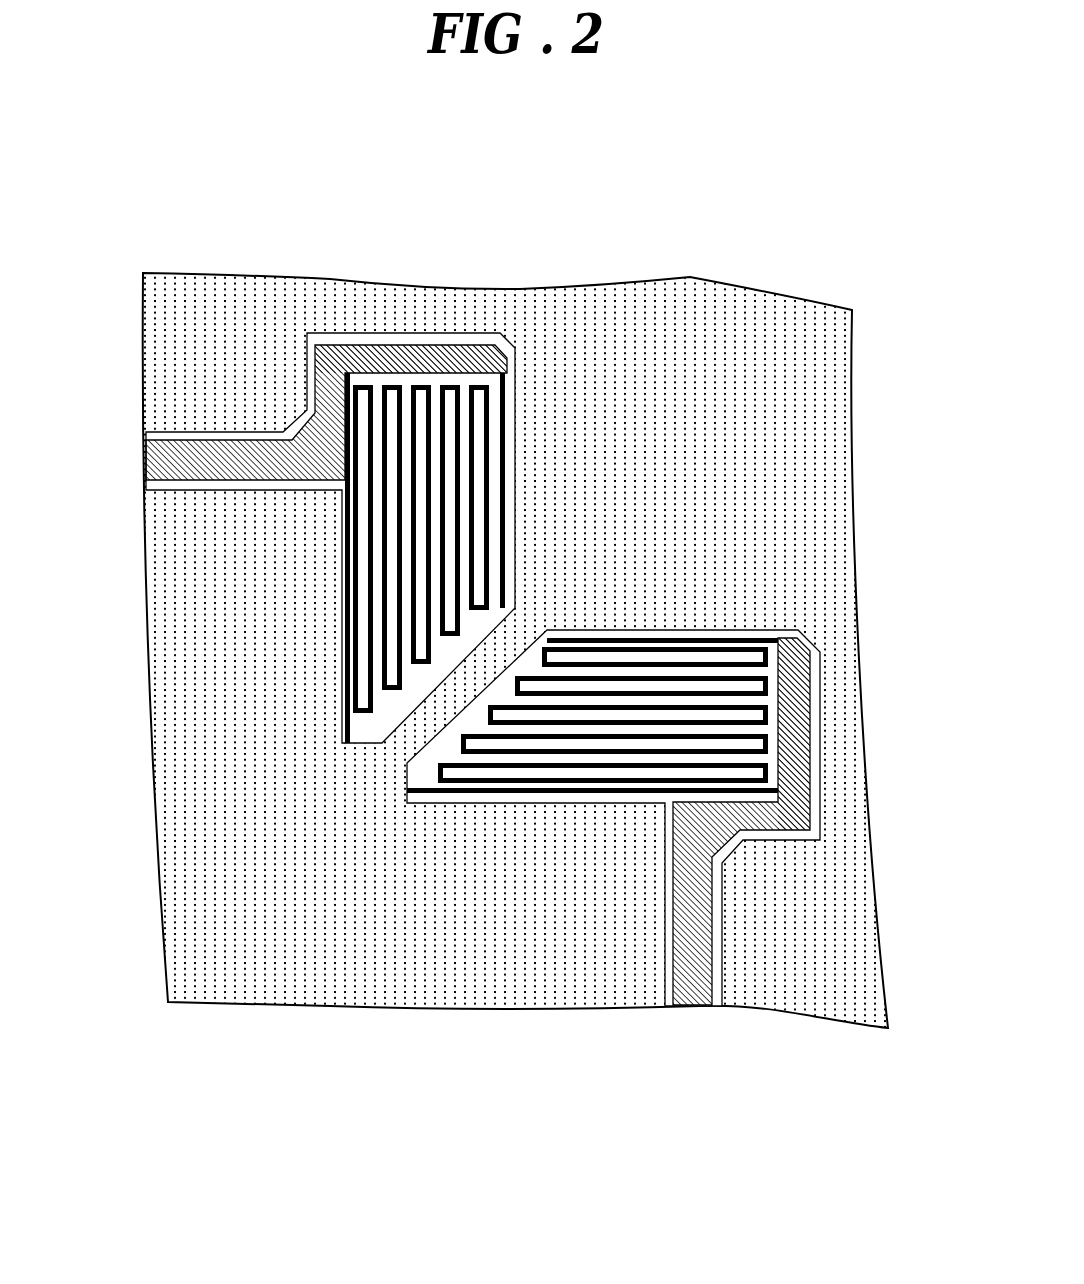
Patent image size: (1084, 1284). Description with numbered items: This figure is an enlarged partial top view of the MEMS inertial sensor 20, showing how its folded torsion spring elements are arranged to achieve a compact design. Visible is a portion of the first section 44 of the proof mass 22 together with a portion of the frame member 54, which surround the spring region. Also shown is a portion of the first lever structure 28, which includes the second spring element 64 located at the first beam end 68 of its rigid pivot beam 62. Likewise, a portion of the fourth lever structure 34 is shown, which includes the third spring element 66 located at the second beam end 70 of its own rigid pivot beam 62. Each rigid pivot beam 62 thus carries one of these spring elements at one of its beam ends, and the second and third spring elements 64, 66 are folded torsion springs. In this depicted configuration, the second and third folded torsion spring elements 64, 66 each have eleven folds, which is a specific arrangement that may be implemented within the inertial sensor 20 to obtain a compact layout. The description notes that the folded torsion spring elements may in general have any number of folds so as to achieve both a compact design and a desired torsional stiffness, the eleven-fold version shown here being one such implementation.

The MEMS inertial sensor 20 is at (502, 661).
The proof mass 22 is at (820, 312).
The first lever structure 28 is at (782, 960).
The fourth lever structure 34 is at (236, 380).
The first section 44 is at (246, 899).
The frame member 54 is at (318, 277).
The rigid pivot beam 62 is at (203, 455).
The second spring element 64 is at (663, 640).
The third spring element 66 is at (505, 462).
The first beam end 68 is at (800, 660).
The second beam end 70 is at (485, 350).